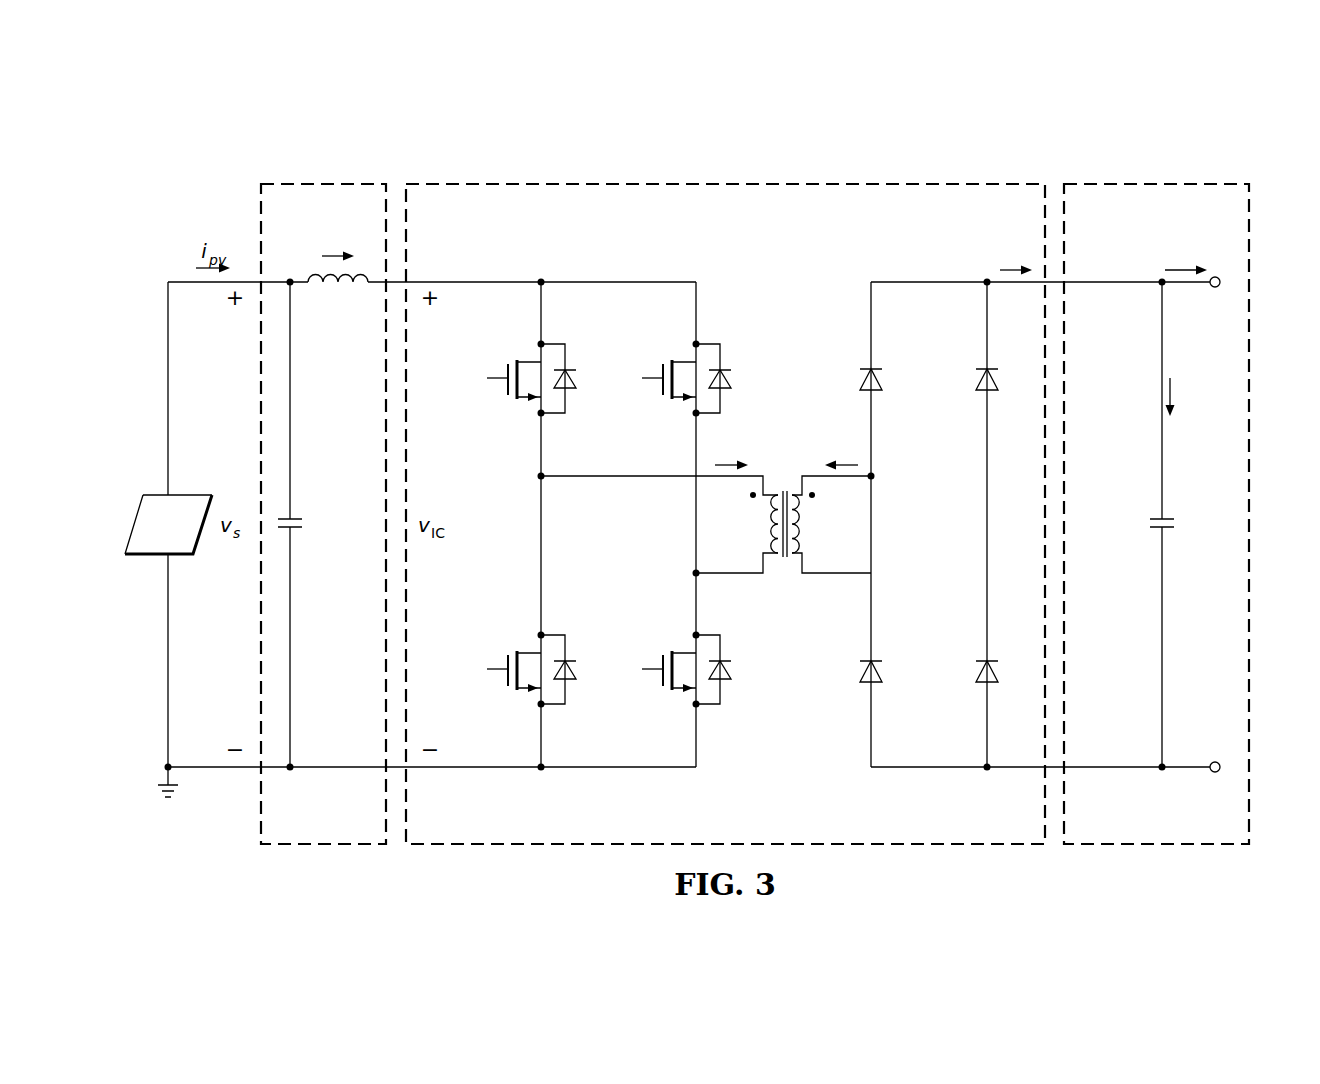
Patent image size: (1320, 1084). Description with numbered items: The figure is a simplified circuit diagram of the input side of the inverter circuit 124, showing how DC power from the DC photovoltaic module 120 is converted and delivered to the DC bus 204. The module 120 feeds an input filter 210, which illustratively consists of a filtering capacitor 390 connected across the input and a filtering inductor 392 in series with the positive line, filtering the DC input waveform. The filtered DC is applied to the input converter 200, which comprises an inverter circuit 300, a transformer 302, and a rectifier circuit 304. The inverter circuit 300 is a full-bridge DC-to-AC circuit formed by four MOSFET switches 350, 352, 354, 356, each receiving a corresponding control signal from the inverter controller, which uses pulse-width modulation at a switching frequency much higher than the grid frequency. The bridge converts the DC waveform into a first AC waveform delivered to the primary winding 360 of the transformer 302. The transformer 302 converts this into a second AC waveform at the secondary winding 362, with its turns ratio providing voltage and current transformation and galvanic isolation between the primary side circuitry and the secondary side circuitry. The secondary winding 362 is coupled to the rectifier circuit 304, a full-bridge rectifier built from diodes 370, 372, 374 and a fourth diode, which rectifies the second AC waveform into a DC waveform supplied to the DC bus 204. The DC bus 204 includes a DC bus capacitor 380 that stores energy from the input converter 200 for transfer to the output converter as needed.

The DC photovoltaic module 120 is at (150, 537).
The inverter circuit 124 is at (900, 150).
The input converter 200 is at (713, 178).
The DC bus 204 is at (1170, 178).
The input filter 210 is at (312, 178).
The inverter circuit 300 is at (713, 274).
The transformer 302 is at (807, 264).
The rectifier circuit 304 is at (917, 252).
The switch 350 is at (501, 363).
The switch 352 is at (501, 687).
The switch 354 is at (656, 363).
The switch 356 is at (656, 687).
The primary winding 360 is at (770, 488).
The secondary winding 362 is at (798, 488).
The diode 370 is at (859, 376).
The diode 372 is at (859, 668).
The diode 374 is at (975, 376).
The DC bus capacitor 380 is at (1149, 524).
The filtering capacitor 390 is at (303, 524).
The filtering inductor 392 is at (314, 278).